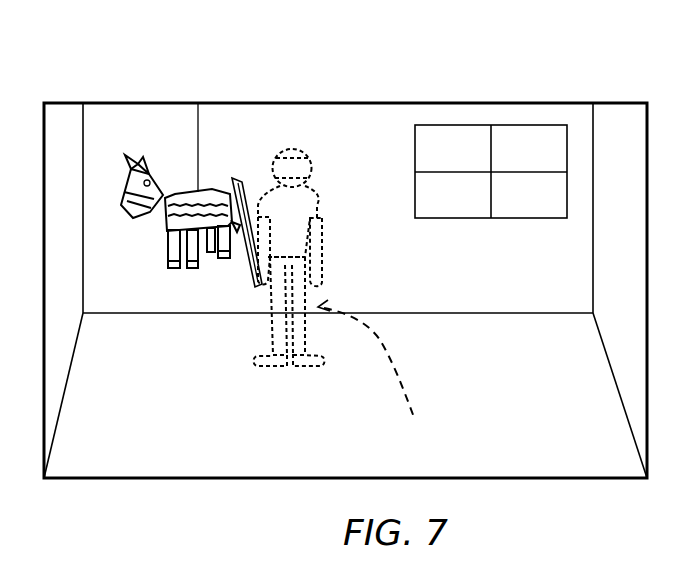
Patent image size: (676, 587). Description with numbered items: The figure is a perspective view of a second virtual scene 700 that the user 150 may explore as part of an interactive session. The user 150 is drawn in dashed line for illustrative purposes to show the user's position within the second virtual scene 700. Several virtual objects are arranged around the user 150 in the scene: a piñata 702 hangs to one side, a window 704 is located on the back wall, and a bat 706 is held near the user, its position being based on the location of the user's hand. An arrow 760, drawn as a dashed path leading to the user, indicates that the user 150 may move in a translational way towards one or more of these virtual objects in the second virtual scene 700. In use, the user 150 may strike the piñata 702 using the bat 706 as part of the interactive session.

The second virtual scene 700 is at (138, 78).
The piñata 702 is at (155, 225).
The window 704 is at (433, 141).
The bat 706 is at (236, 178).
The user 150 is at (320, 220).
The arrow 760 is at (395, 372).